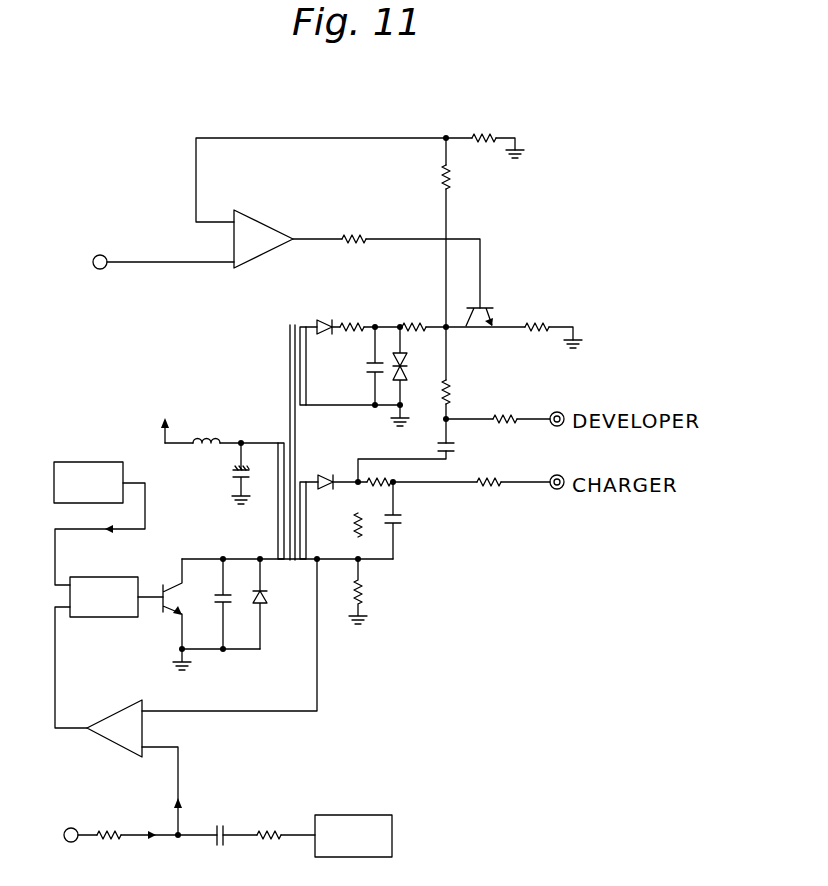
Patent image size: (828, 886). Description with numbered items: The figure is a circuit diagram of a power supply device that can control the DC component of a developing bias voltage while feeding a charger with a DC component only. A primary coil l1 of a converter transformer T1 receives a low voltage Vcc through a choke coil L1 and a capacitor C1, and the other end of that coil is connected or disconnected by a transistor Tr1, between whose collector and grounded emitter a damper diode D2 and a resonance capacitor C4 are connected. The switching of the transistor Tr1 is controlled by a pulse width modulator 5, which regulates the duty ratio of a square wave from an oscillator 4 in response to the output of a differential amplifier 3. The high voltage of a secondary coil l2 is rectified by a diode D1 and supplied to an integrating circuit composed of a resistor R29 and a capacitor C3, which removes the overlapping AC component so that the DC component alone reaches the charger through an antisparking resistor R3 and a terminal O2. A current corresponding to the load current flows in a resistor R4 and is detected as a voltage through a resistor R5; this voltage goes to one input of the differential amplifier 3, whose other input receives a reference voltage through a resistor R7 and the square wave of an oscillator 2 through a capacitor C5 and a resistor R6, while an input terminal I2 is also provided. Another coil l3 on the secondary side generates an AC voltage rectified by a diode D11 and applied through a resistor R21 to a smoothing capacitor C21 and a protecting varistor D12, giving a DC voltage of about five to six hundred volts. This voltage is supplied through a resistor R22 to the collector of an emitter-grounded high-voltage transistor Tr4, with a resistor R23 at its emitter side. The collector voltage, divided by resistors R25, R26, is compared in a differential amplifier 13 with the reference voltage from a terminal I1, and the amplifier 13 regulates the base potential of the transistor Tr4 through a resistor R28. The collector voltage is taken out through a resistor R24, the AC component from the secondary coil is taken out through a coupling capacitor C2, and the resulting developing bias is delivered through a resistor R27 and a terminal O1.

The differential amplifier 13 is at (257, 215).
The terminal I1 is at (101, 254).
The resistor R26 is at (485, 128).
The resistor R25 is at (455, 186).
The resistor R28 is at (353, 231).
The converter transformer T1 is at (290, 320).
The coil l3 is at (306, 360).
The diode D11 is at (320, 318).
The resistor R21 is at (352, 316).
The resistor R22 is at (410, 320).
The smoothing capacitor C21 is at (369, 366).
The protecting varistor D12 is at (424, 368).
The high-voltage transistor Tr4 is at (480, 324).
The resistor R23 is at (537, 322).
The resistor R24 is at (448, 392).
The resistor R27 is at (508, 412).
The terminal O1 is at (564, 416).
The coupling capacitor C2 is at (458, 448).
The terminal O2 is at (563, 486).
The resistor R29 is at (384, 474).
The antisparking resistor R3 is at (482, 492).
The diode D1 is at (327, 476).
The secondary coil l2 is at (305, 529).
The resistor R4 is at (363, 527).
The capacitor C3 is at (403, 521).
The resistor R5 is at (366, 592).
The low voltage Vcc is at (162, 420).
The choke coil L1 is at (206, 437).
The capacitor C1 is at (230, 473).
The primary coil l1 is at (277, 515).
The oscillator 4 is at (86, 461).
The pulse width modulator 5 is at (103, 577).
The transistor Tr1 is at (170, 617).
The resonance capacitor C4 is at (233, 598).
The damper diode D2 is at (266, 598).
The differential amplifier 3 is at (103, 714).
The input terminal I2 is at (67, 825).
The resistor R7 is at (119, 829).
The capacitor C5 is at (218, 826).
The resistor R6 is at (270, 828).
The oscillator 2 is at (346, 815).